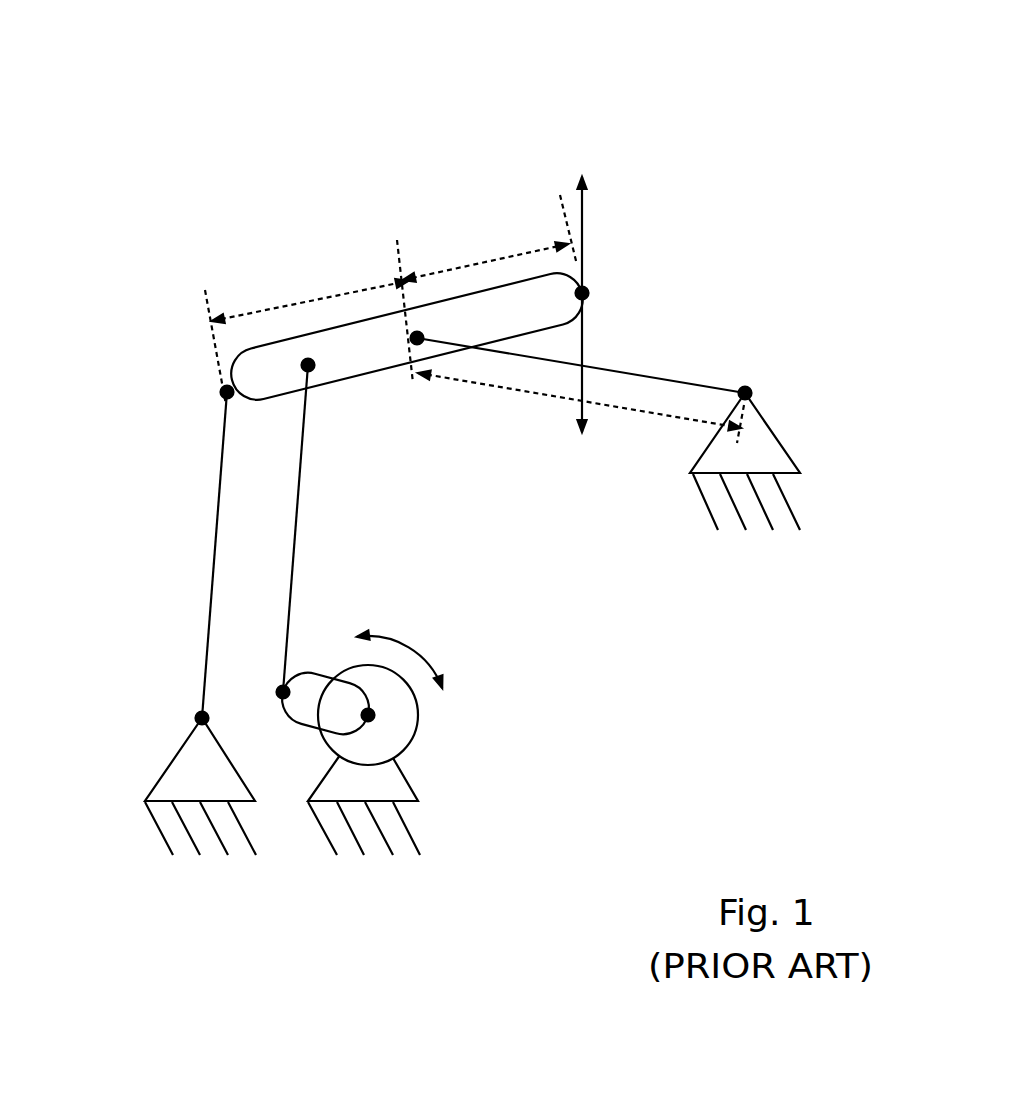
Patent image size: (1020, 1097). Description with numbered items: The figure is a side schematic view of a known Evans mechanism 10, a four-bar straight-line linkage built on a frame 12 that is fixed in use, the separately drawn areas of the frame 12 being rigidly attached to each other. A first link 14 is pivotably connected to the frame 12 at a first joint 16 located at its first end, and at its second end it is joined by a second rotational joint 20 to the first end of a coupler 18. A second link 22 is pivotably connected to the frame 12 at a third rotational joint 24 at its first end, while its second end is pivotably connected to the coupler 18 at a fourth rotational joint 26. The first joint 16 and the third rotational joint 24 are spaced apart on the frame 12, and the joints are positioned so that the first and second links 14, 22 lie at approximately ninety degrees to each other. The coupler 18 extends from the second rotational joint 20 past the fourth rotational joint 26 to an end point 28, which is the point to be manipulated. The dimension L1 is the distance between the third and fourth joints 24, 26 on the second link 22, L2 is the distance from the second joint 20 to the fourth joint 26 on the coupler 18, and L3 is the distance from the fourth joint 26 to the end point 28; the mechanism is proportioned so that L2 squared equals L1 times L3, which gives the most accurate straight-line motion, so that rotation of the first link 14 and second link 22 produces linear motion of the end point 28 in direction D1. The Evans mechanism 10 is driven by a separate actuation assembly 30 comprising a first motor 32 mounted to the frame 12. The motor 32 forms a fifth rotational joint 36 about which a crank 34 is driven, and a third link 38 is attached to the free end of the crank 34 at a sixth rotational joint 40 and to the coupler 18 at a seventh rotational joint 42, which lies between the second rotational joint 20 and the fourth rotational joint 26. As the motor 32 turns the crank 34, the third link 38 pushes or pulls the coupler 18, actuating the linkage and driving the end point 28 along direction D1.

The Evans mechanism 10 is at (162, 95).
The frame 12 is at (217, 833).
The first link 14 is at (214, 553).
The first joint 16 is at (202, 718).
The coupler 18 is at (382, 344).
The second rotational joint 20 is at (222, 398).
The second link 22 is at (673, 375).
The third rotational joint 24 is at (748, 387).
The fourth rotational joint 26 is at (417, 337).
The end point 28 is at (582, 293).
The actuation assembly 30 is at (390, 556).
The first motor 32 is at (402, 718).
The crank 34 is at (318, 692).
The fifth rotational joint 36 is at (368, 715).
The third link 38 is at (300, 503).
The sixth rotational joint 40 is at (262, 684).
The seventh rotational joint 42 is at (307, 364).
The distance between third and fourth joints L1 is at (581, 407).
The distance from second joint to fourth joint L2 is at (309, 322).
The distance between fourth joint and end point L3 is at (490, 238).
The direction of linear motion D1 is at (583, 233).